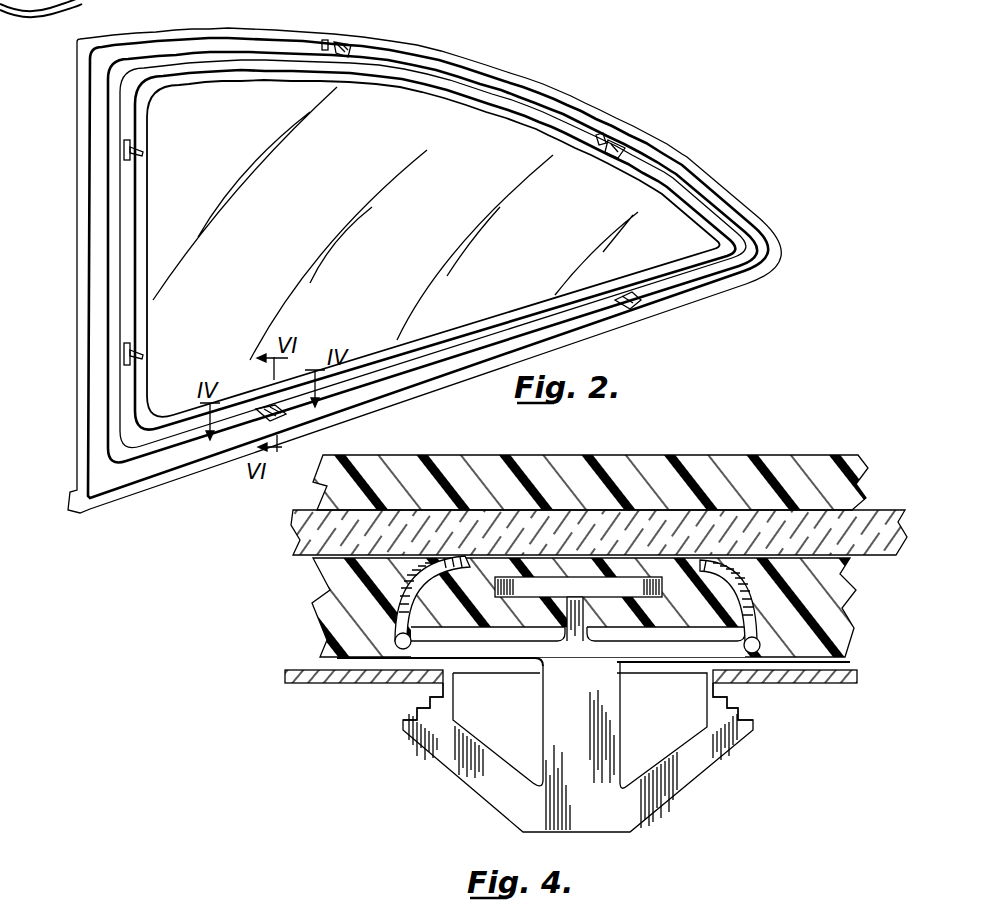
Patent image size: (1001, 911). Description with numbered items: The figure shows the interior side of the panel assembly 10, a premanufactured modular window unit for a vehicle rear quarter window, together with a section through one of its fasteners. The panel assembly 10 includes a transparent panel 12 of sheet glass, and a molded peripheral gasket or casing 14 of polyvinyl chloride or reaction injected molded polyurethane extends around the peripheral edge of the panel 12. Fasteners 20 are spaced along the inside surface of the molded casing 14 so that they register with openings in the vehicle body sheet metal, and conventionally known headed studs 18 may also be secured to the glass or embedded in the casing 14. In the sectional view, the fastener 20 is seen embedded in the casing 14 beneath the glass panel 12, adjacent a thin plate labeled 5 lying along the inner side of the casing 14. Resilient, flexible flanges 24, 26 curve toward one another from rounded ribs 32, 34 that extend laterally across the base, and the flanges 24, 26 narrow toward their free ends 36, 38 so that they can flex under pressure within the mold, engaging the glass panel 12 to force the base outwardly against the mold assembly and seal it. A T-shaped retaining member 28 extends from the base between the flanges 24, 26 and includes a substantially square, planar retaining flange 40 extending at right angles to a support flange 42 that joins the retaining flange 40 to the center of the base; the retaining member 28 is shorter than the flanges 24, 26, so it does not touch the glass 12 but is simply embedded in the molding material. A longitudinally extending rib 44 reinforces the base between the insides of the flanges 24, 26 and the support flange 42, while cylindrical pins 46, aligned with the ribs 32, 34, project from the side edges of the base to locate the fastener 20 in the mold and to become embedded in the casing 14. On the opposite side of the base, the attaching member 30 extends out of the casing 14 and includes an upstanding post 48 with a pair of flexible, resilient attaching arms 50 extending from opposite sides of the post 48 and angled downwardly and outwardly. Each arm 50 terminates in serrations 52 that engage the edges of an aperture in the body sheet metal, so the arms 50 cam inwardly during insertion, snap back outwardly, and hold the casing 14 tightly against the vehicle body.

In FIG. 4, the trim plate 5 is at (312, 683).
In FIG. 2, the panel assembly 10 is at (605, 104).
In FIG. 2, the transparent panel 12 is at (439, 222).
In FIG. 4, the transparent panel 12 is at (303, 532).
In FIG. 2, the molded peripheral gasket or casing 14 is at (508, 44).
In FIG. 4, the molded peripheral gasket or casing 14 is at (810, 468).
In FIG. 2, the headed studs 18 is at (127, 158).
In FIG. 2, the fastener 20 is at (348, 52).
In FIG. 4, the fastener 20 is at (583, 642).
In FIG. 4, the resilient flexible flange 24 is at (745, 594).
In FIG. 4, the resilient flexible flange 26 is at (400, 603).
In FIG. 4, the T-shaped retaining member 28 is at (583, 572).
In FIG. 4, the attaching member 30 is at (593, 732).
In FIG. 4, the rounded rib 32 is at (755, 632).
In FIG. 4, the rounded rib 34 is at (393, 632).
In FIG. 4, the free end of flange 36 is at (662, 587).
In FIG. 4, the free end of flange 38 is at (512, 583).
In FIG. 4, the retaining flange 40 is at (638, 506).
In FIG. 4, the support flange 42 is at (560, 625).
In FIG. 4, the longitudinally extending rib 44 is at (490, 632).
In FIG. 4, the extending pins 46 is at (397, 648).
In FIG. 4, the post 48 is at (584, 718).
In FIG. 4, the attaching arms 50 is at (467, 767).
In FIG. 4, the serrations 52 is at (420, 705).